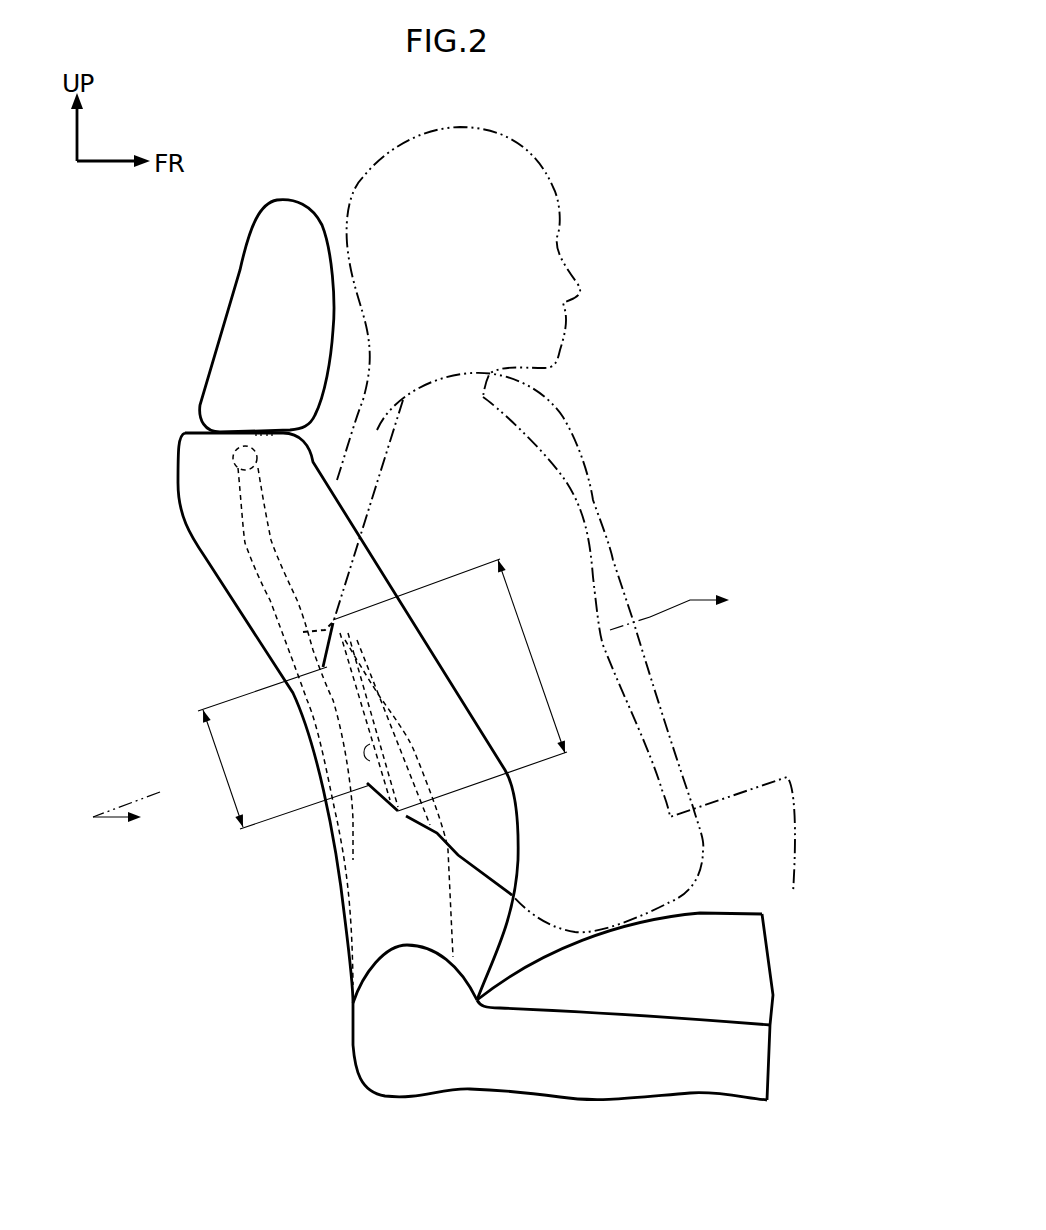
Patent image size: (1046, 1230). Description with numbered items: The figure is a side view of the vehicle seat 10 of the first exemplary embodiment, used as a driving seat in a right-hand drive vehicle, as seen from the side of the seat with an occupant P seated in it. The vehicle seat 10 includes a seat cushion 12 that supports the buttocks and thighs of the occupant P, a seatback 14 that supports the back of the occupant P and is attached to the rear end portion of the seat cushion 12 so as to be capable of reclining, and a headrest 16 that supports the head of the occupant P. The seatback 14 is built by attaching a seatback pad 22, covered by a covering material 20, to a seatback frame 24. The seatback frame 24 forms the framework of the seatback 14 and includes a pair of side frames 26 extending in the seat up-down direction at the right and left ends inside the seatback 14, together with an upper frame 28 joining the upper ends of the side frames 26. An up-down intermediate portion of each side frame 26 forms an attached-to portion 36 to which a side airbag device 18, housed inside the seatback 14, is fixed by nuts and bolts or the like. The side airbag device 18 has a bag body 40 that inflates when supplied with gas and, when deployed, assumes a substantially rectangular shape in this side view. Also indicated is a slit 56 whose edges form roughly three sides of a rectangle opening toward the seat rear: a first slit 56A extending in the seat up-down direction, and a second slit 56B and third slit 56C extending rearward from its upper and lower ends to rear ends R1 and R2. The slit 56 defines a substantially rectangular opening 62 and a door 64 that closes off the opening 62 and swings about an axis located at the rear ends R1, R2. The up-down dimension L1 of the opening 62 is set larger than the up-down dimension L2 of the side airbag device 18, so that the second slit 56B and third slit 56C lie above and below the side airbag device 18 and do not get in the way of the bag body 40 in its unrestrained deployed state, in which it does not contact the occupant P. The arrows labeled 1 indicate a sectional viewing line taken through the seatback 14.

The vehicle seat 10 is at (672, 205).
The seat cushion 12 is at (733, 912).
The seatback 14 is at (172, 485).
The headrest 16 is at (236, 277).
The side airbag device 18 is at (352, 741).
The covering material 20 is at (358, 531).
The seatback pad 22 is at (320, 507).
The seatback frame 24 is at (234, 541).
The side frame 26 is at (269, 565).
The upper frame 28 is at (243, 462).
The attached-to portion 36 is at (335, 703).
The bag body 40 is at (575, 440).
The slit 56 is at (417, 759).
The first slit 56A is at (367, 683).
The second slit 56B is at (307, 630).
The third slit 56C is at (380, 813).
The opening 62 is at (383, 757).
The door 64 is at (380, 801).
The occupant P is at (578, 503).
The rear end of the second slit R1 is at (333, 633).
The rear end of the third slit R2 is at (375, 822).
The seat up-down direction dimension of the opening L1 is at (530, 652).
The seat up-down direction dimension of the side airbag device L2 is at (224, 768).
The section line 1 is at (421, 711).